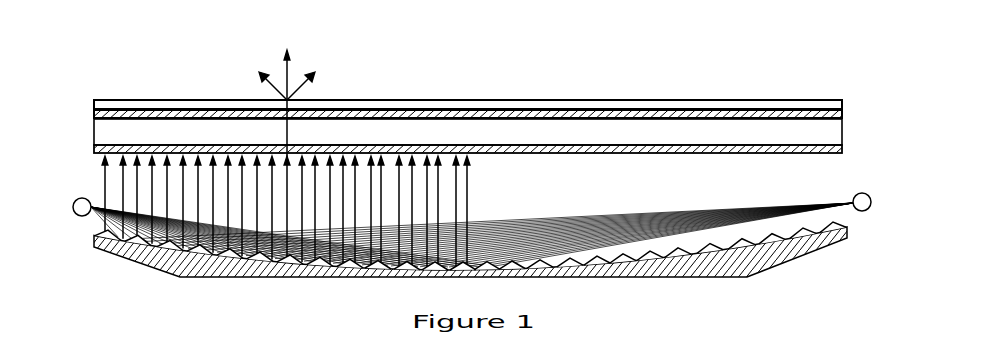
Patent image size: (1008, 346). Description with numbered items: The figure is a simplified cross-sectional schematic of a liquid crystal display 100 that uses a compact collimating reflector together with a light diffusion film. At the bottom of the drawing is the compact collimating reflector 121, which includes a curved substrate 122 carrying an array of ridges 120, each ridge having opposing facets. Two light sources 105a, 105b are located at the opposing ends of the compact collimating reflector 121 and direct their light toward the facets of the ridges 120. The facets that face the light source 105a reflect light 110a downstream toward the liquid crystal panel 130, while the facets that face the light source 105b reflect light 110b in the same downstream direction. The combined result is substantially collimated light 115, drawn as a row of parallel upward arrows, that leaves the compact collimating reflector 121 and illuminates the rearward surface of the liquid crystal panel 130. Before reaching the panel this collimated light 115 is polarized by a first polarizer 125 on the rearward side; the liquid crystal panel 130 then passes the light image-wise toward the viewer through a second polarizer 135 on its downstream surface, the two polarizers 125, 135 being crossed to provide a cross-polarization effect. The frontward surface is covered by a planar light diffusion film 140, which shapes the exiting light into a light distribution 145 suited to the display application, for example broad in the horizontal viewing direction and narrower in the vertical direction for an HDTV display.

The liquid crystal display 100 is at (721, 64).
The light source 105a is at (855, 194).
The light source 105b is at (75, 214).
The light 110a is at (710, 208).
The light 110b is at (101, 202).
The collimated light 115 is at (468, 191).
The ridges 120 is at (688, 258).
The compact collimating reflector 121 is at (851, 222).
The curved substrate 122 is at (740, 273).
The first polarizer 125 is at (843, 147).
The liquid crystal panel 130 is at (844, 129).
The second polarizer 135 is at (843, 114).
The light diffusion film 140 is at (842, 99).
The light distribution 145 is at (297, 70).